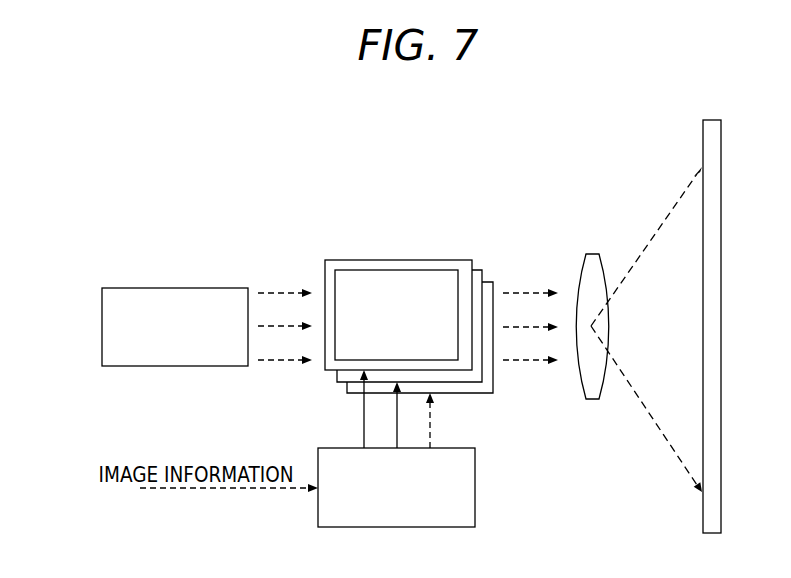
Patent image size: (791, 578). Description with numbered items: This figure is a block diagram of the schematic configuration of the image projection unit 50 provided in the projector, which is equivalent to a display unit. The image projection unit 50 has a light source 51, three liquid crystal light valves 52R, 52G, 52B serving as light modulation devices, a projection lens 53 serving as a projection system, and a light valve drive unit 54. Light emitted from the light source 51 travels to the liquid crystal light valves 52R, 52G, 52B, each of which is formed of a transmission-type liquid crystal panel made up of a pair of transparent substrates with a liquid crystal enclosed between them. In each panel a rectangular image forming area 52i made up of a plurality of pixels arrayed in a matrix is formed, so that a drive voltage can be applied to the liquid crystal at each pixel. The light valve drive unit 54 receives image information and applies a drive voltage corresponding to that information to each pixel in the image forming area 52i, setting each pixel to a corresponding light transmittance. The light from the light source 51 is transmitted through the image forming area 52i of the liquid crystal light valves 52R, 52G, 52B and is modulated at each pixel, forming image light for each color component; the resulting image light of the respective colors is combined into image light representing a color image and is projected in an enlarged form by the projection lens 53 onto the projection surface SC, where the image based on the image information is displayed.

The image projection unit 50 is at (171, 171).
The light source 51 is at (197, 287).
The liquid crystal light valve 52R is at (410, 260).
The liquid crystal light valve 52G is at (480, 270).
The liquid crystal light valve 52B is at (486, 282).
The image forming area 52i is at (345, 350).
The projection lens 53 is at (592, 254).
The light valve drive unit 54 is at (457, 448).
The projection surface SC is at (703, 140).